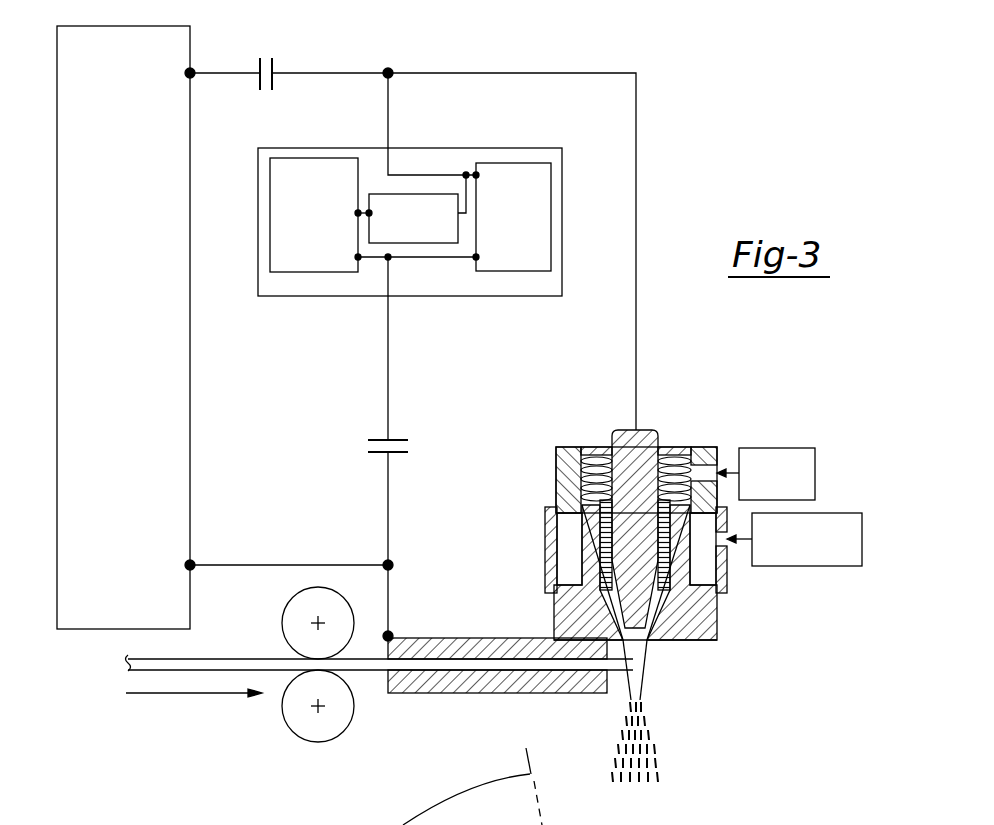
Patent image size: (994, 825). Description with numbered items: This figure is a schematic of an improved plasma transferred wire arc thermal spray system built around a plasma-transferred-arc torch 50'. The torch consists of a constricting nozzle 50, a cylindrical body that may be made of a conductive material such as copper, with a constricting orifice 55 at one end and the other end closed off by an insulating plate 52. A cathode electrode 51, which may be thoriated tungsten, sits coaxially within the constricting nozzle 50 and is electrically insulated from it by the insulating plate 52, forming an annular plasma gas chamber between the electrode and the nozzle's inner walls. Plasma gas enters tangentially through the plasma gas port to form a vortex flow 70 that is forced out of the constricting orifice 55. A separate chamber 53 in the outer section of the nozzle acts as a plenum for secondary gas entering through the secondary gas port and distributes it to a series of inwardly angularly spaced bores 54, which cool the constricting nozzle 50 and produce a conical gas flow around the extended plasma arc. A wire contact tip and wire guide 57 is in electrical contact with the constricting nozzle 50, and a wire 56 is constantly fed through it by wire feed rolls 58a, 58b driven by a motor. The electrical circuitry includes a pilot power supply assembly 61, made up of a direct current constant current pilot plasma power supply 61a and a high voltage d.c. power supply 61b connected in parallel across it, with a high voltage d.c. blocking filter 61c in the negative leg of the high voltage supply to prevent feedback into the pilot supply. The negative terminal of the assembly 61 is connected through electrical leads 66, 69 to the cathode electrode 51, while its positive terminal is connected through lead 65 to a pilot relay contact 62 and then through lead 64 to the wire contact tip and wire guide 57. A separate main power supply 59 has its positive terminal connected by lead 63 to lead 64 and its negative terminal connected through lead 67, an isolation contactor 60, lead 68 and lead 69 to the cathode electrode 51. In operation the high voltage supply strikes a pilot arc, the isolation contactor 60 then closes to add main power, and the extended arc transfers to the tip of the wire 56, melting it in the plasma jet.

The constricting nozzle 50 is at (699, 676).
The plasma-transferred-arc torch 50' is at (679, 561).
The cathode electrode 51 is at (622, 430).
The insulating plate 52 is at (590, 446).
The separate chamber 53 is at (706, 570).
The inwardly angularly spaced bores 54 is at (705, 617).
The constricting orifice 55 is at (655, 657).
The wire 56 is at (618, 680).
The wire contact tip and wire guide 57 is at (525, 638).
The wire feed roll 58a is at (283, 613).
The wire feed roll 58b is at (284, 718).
The main plasma transferred wire arc power supply 59 is at (162, 183).
The isolation contactor 60 is at (267, 58).
The pilot power supply assembly 61 is at (563, 170).
The pilot plasma power supply 61a is at (318, 272).
The high voltage d.c. power supply 61b is at (520, 162).
The high voltage d.c. blocking filter 61c is at (440, 193).
The pilot relay contact 62 is at (406, 446).
The lead 63 is at (245, 565).
The lead 64 is at (386, 510).
The lead 65 is at (386, 374).
The electrical lead 66 is at (390, 110).
The lead 67 is at (225, 72).
The lead 68 is at (350, 72).
The lead 69 is at (453, 72).
The vortex flow 70 is at (556, 475).